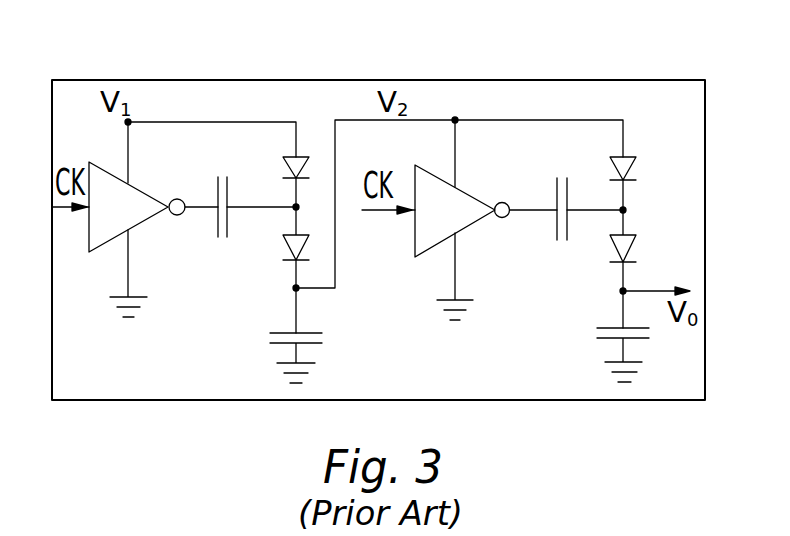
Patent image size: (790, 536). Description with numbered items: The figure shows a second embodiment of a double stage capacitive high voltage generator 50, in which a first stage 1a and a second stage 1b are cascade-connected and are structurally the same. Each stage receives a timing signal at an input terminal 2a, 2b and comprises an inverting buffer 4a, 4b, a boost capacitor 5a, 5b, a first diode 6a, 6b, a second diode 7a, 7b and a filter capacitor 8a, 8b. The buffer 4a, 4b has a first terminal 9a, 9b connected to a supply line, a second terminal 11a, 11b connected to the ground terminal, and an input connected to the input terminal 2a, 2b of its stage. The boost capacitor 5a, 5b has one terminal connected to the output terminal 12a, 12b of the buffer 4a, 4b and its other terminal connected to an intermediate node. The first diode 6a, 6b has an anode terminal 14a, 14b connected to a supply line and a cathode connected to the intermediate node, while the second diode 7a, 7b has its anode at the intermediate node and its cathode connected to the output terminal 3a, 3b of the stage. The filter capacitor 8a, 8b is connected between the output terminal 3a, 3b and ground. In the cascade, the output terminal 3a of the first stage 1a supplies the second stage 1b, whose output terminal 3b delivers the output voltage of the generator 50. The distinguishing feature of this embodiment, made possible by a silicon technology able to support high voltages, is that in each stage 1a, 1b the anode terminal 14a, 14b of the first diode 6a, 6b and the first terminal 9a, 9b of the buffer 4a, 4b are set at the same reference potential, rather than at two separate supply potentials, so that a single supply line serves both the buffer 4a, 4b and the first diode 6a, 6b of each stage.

The first stage 1a is at (80, 102).
The second stage 1b is at (672, 105).
The high voltage generator 50 is at (692, 112).
The anode terminal of first diode 14a is at (296, 122).
The anode terminal of first diode 14b is at (625, 134).
The first terminal of buffer 9a is at (128, 158).
The first terminal of buffer 9b is at (456, 155).
The buffer 4a is at (133, 205).
The buffer 4b is at (427, 188).
The input terminal 2a is at (62, 209).
The input terminal 2b is at (380, 213).
The second terminal of buffer 11a is at (130, 280).
The second terminal of buffer 11b is at (456, 262).
The output terminal of buffer 12a is at (200, 210).
The output terminal of buffer 12b is at (530, 213).
The boost capacitor 5a is at (214, 224).
The boost capacitor 5b is at (555, 195).
The first diode 6a is at (285, 170).
The first diode 6b is at (630, 170).
The second diode 7a is at (290, 243).
The second diode 7b is at (630, 246).
The output terminal 3a is at (333, 294).
The output terminal 3b is at (656, 290).
The filter capacitor 8a is at (315, 343).
The filter capacitor 8b is at (635, 338).